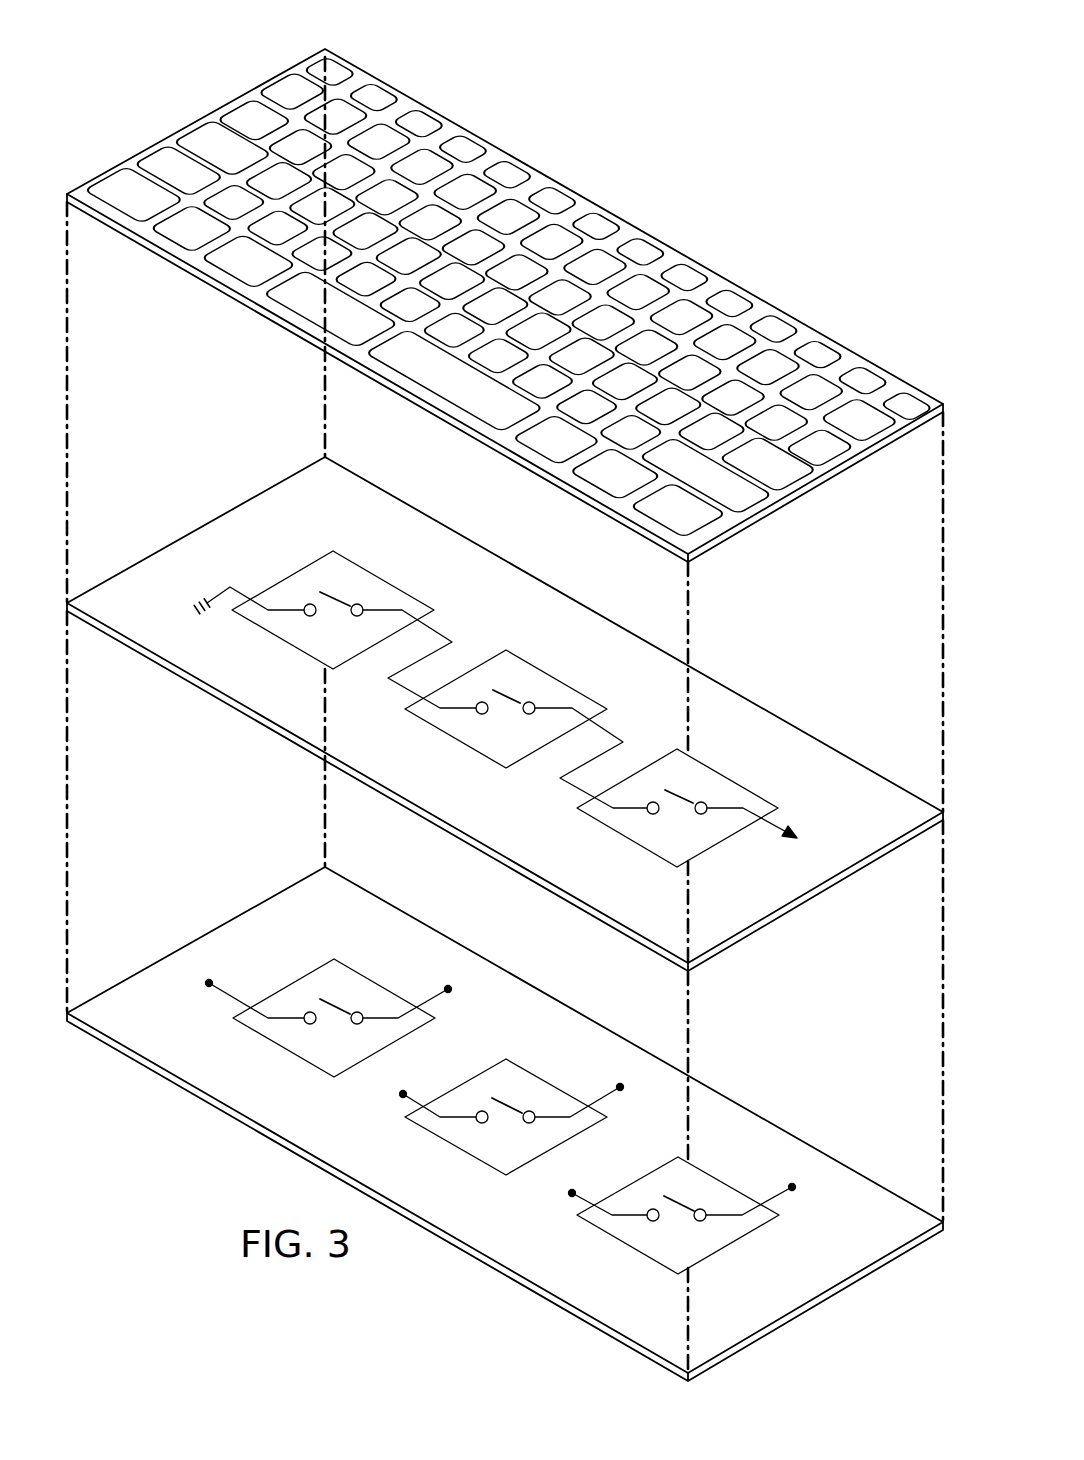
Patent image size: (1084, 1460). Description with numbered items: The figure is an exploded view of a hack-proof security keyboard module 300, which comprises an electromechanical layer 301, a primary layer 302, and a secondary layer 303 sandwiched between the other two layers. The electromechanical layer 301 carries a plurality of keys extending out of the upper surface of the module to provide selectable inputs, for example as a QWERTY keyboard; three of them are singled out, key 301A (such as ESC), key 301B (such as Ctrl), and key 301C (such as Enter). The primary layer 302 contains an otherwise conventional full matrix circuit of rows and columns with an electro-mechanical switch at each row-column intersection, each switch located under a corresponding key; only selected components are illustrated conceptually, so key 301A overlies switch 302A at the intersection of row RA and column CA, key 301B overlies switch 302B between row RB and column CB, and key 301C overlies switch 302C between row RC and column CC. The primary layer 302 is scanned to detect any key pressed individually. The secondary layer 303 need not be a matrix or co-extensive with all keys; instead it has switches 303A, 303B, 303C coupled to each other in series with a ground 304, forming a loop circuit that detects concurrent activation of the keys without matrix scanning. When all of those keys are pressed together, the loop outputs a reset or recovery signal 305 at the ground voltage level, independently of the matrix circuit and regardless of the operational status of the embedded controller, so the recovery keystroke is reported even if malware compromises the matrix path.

The hack-proof security keyboard module 300 is at (727, 87).
The electromechanical layer 301 is at (501, 283).
The key 301A is at (318, 68).
The key 301B is at (110, 185).
The key 301C is at (790, 470).
The secondary layer 303 is at (505, 714).
The switch 303A is at (313, 562).
The switch 303B is at (558, 678).
The switch 303C is at (748, 758).
The ground 304 is at (188, 598).
The reset or recovery signal 305 is at (773, 820).
The primary layer 302 is at (505, 1124).
The switch 302A is at (315, 971).
The switch 302B is at (578, 1067).
The switch 302C is at (748, 1166).